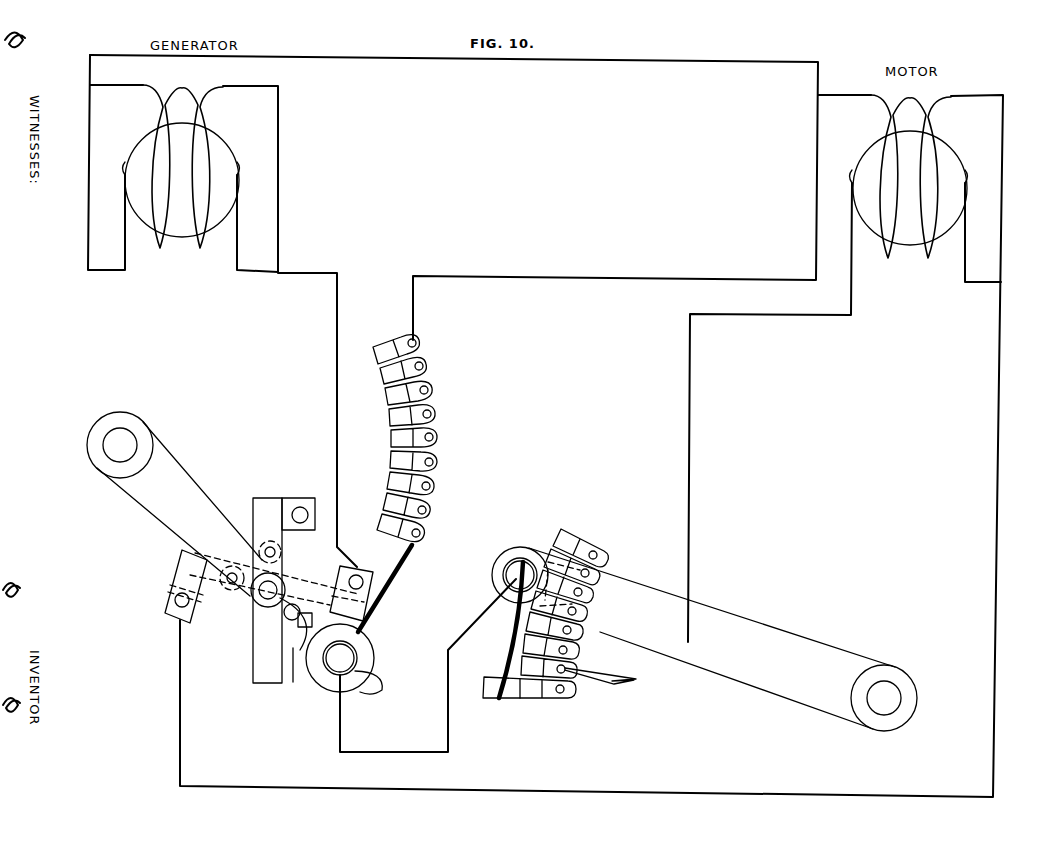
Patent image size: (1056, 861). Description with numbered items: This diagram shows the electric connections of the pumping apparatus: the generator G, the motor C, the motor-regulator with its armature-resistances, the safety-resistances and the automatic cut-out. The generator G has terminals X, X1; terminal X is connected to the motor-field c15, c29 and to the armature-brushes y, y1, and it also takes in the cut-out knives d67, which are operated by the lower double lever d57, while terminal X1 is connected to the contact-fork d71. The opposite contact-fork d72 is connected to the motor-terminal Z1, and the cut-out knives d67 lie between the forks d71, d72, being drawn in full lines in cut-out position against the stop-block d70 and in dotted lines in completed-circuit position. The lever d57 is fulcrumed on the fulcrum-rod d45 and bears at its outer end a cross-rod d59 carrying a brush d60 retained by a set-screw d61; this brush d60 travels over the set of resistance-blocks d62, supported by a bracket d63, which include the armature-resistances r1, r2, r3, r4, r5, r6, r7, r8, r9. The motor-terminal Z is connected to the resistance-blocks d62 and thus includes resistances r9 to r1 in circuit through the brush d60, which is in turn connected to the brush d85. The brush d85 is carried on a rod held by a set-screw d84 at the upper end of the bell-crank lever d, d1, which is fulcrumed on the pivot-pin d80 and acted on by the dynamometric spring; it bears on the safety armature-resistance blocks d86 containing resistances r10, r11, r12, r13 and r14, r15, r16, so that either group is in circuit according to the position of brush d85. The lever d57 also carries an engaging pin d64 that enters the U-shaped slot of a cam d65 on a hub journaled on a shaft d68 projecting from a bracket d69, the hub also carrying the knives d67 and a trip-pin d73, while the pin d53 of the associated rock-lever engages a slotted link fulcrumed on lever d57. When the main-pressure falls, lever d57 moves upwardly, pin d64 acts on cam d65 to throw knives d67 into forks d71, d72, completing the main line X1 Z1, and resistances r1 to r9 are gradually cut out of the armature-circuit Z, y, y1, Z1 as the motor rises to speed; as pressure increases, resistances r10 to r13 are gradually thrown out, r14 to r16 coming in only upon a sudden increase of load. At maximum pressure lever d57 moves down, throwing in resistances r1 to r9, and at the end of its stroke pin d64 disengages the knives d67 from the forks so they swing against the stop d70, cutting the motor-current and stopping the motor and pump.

The generator G is at (177, 166).
The motor C is at (905, 176).
The generator terminal X is at (75, 88).
The generator terminal X1 is at (290, 257).
The motor terminal Z is at (800, 96).
The motor terminal Z1 is at (1016, 283).
The armature-brush y is at (838, 200).
The armature-brush y1 is at (979, 197).
The motor-field c15 is at (885, 264).
The motor-field c29 is at (932, 264).
The fulcrum-rod d45 is at (125, 440).
The double lever d57 is at (179, 509).
The cut-out knives d67 is at (262, 500).
The stop-block d70 is at (302, 492).
The trip-pin d73 is at (282, 553).
The shaft d68 is at (274, 579).
The bracket d63 is at (257, 594).
The engaging pin d64 is at (282, 614).
The bracket d69 is at (263, 683).
The cam d65 is at (293, 650).
The contact-fork d72 is at (183, 575).
The cross-rod d59 is at (357, 655).
The set-screw d61 is at (383, 685).
The contact-fork d71 is at (363, 615).
The brush d60 is at (395, 589).
The resistance-blocks d62 is at (372, 527).
The armature-resistance r1 is at (420, 535).
The armature-resistance r2 is at (426, 509).
The armature-resistance r3 is at (430, 485).
The armature-resistance r4 is at (433, 461).
The armature-resistance r5 is at (433, 436).
The armature-resistance r6 is at (431, 413).
The armature-resistance r7 is at (428, 389).
The armature-resistance r8 is at (423, 365).
The armature-resistance r9 is at (416, 342).
The safety armature-resistance r10 is at (576, 610).
The safety armature-resistance r11 is at (571, 629).
The safety armature-resistance r12 is at (567, 649).
The safety armature-resistance r13 is at (564, 688).
The safety armature-resistance r14 is at (582, 591).
The safety armature-resistance r15 is at (589, 572).
The safety armature-resistance r16 is at (597, 554).
The set-screw d84 is at (528, 548).
The lever d is at (536, 552).
The pin d53 is at (517, 578).
The brush d85 is at (509, 628).
The bell-crank lever d1 is at (712, 638).
The pivot-pin d80 is at (878, 700).
The safety armature-resistance blocks d86 is at (568, 541).